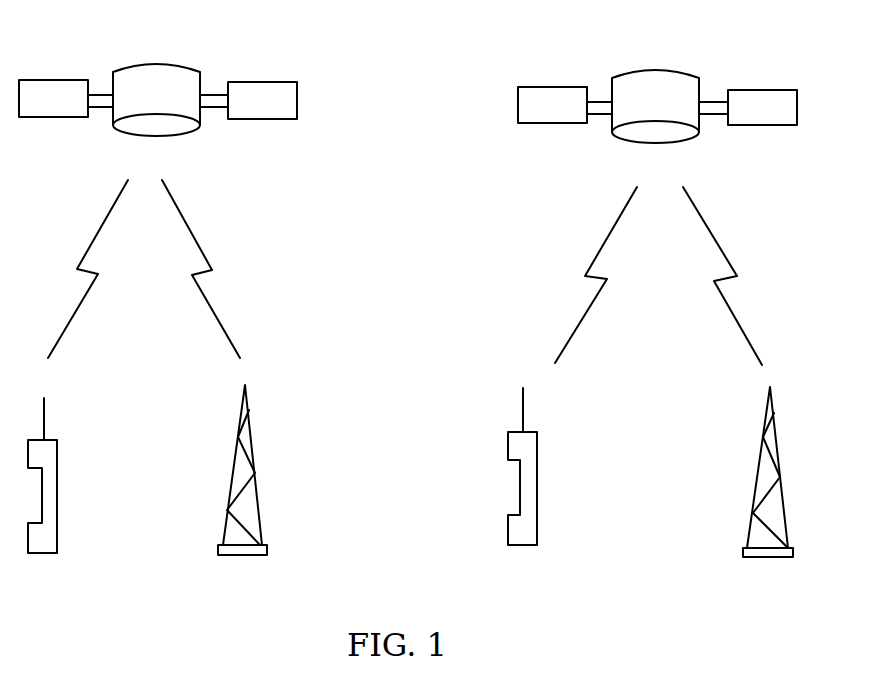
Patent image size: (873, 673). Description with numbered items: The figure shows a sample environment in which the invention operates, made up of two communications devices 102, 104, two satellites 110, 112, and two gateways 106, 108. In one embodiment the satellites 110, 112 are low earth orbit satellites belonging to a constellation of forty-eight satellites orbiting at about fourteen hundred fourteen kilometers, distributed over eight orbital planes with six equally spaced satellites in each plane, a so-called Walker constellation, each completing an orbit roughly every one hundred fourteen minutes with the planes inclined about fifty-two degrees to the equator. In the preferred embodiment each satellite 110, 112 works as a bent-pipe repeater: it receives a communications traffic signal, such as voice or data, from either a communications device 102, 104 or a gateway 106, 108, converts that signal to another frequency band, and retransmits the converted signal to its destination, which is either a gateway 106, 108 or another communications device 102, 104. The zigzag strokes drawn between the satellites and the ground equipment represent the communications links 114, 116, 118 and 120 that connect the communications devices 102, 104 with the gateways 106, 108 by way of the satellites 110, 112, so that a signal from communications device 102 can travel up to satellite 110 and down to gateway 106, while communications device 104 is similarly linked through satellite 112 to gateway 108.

The communications device 102 is at (53, 438).
The communications device 104 is at (532, 428).
The gateway 106 is at (263, 543).
The gateway 108 is at (788, 545).
The satellite 110 is at (169, 60).
The satellite 112 is at (668, 67).
The communications link 114 is at (104, 222).
The communications link 116 is at (189, 220).
The communications link 118 is at (612, 228).
The communications link 120 is at (710, 225).